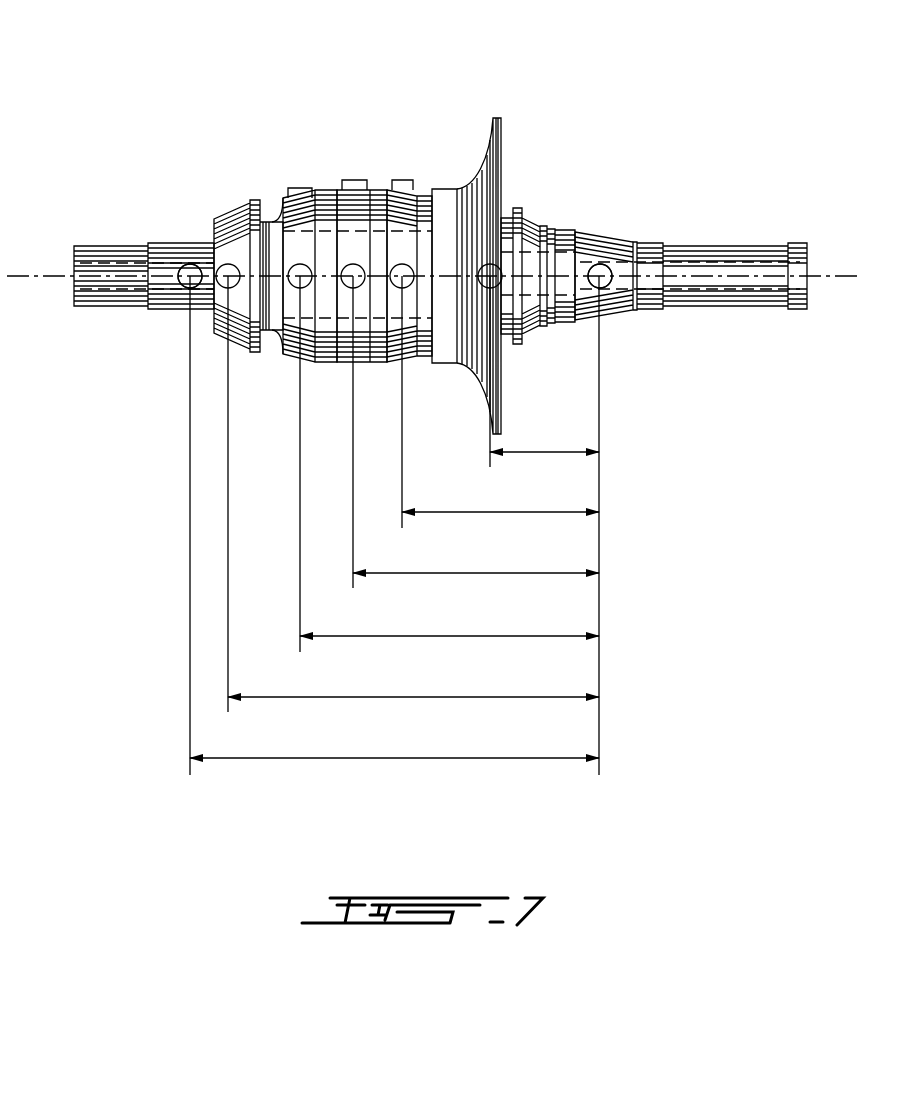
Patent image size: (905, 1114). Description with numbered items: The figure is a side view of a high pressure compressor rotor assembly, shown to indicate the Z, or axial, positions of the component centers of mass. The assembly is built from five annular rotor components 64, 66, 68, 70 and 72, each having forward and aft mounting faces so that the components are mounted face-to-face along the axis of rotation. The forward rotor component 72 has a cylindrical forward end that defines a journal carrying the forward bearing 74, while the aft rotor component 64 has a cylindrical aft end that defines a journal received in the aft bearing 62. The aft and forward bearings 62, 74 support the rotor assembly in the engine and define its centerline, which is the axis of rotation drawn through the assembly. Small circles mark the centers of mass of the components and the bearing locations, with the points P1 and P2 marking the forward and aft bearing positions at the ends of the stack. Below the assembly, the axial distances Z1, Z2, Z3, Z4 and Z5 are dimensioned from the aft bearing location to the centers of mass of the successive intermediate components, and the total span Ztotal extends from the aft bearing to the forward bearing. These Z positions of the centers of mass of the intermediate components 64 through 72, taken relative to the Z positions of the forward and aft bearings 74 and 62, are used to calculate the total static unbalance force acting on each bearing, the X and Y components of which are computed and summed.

The aft bearing 62 is at (593, 228).
The aft rotor component 64 is at (478, 168).
The rotor component 66 is at (408, 186).
The rotor component 68 is at (350, 180).
The rotor component 70 is at (297, 190).
The forward rotor component 72 is at (228, 200).
The forward bearing 74 is at (200, 242).
The point P1 is at (190, 276).
The point P2 is at (602, 272).
The axial distance Z1 is at (544, 436).
The axial distance Z2 is at (500, 499).
The axial distance Z3 is at (476, 559).
The axial distance Z4 is at (449, 621).
The axial distance Z5 is at (413, 683).
The total axial distance Ztotal is at (394, 742).